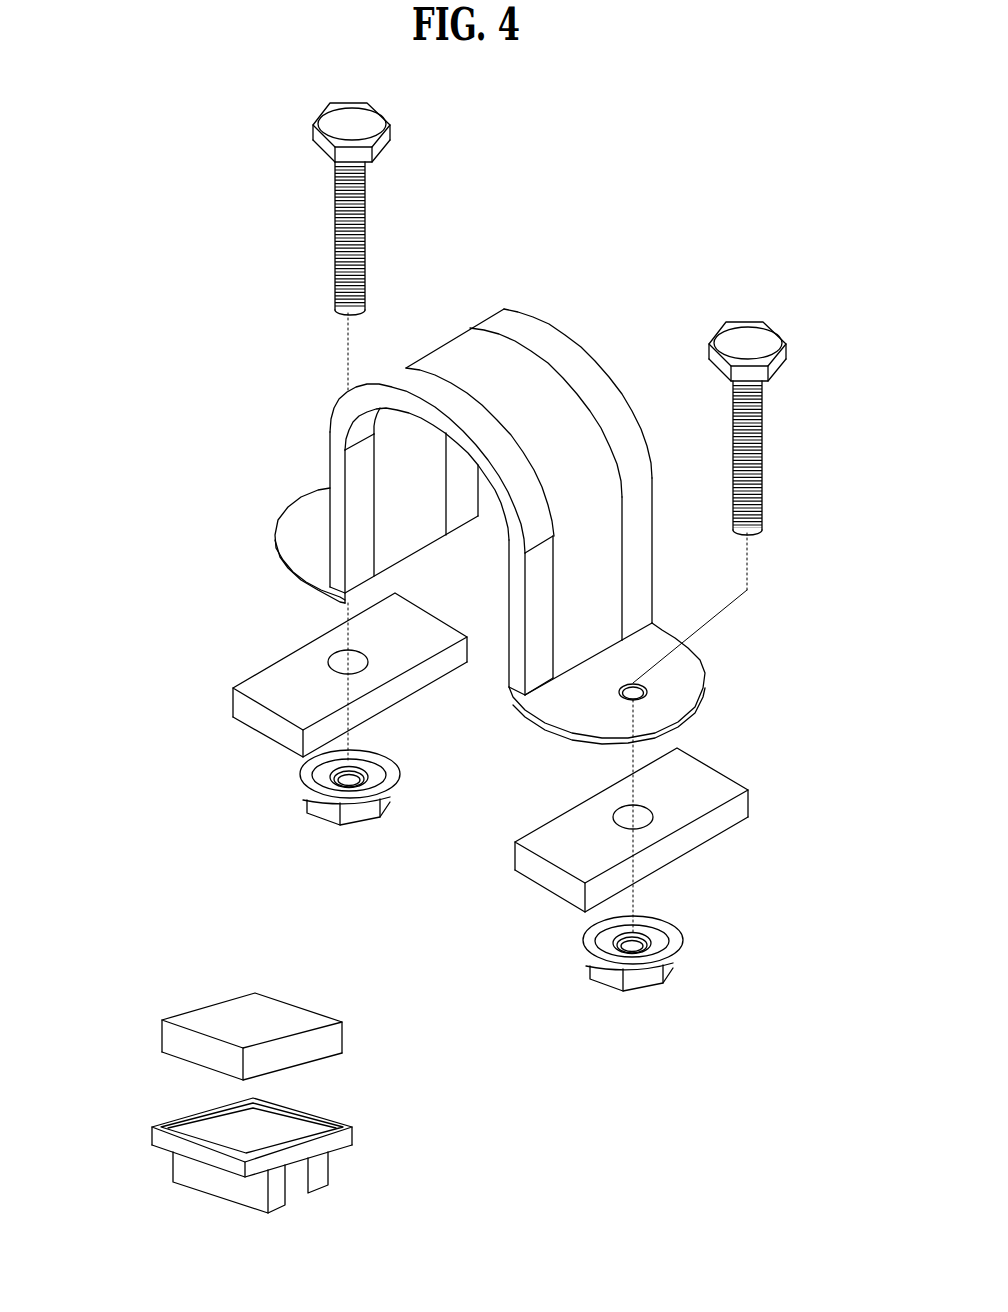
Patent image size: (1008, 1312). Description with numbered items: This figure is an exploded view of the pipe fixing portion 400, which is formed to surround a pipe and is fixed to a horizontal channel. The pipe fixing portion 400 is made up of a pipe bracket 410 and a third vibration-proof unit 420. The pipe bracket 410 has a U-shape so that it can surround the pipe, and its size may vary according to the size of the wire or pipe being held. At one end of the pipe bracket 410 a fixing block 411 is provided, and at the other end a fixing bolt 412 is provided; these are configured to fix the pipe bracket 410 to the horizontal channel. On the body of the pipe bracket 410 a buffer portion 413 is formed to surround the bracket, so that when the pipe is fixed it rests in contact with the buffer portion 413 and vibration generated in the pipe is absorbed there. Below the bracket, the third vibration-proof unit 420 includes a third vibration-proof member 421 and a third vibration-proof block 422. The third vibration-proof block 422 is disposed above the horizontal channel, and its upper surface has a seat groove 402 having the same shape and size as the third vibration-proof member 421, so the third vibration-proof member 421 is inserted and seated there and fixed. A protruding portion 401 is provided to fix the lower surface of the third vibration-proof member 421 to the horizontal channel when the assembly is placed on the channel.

The pipe fixing portion 400 is at (245, 299).
The pipe bracket 410 is at (502, 353).
The fixing block 411 is at (748, 792).
The fixing bolt 412 is at (762, 342).
The buffer portion 413 is at (617, 437).
The third vibration-proof unit 420 is at (455, 962).
The third vibration-proof member 421 is at (333, 1043).
The third vibration-proof block 422 is at (345, 1138).
The protruding portion 401 is at (320, 1190).
The seat groove 402 is at (227, 1143).